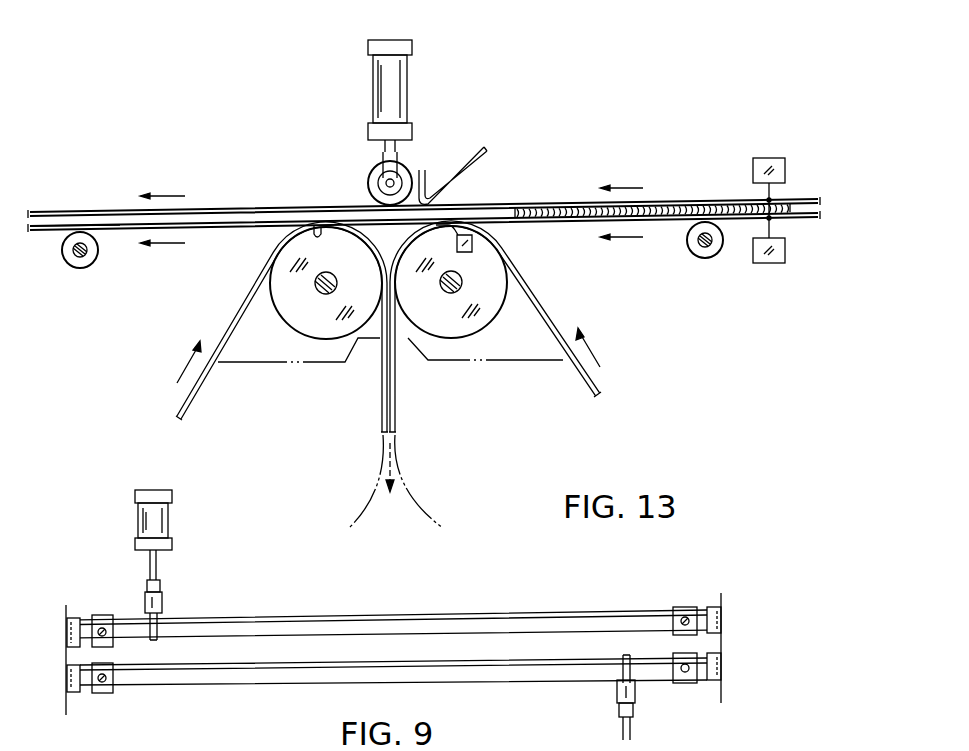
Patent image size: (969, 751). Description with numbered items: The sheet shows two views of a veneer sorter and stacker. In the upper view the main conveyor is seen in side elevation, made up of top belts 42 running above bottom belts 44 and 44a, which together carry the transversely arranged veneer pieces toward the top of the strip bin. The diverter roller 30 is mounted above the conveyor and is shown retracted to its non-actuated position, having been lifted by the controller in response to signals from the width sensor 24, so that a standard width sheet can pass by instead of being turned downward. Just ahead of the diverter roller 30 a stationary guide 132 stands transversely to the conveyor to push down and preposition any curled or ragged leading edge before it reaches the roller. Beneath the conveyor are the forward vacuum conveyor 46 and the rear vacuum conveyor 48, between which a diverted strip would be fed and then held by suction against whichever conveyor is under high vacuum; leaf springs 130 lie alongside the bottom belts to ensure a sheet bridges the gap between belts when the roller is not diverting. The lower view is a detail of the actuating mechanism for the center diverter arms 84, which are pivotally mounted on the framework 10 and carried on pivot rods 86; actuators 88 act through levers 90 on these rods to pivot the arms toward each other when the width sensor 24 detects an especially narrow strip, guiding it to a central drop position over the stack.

In FIG. 9, the framework 10 is at (723, 636).
In FIG. 13, the veneer width sensor 24 is at (758, 158).
In FIG. 13, the diverter roller 30 is at (368, 186).
In FIG. 13, the top belts 42 is at (83, 210).
In FIG. 13, the bottom belts 44 is at (571, 228).
In FIG. 13, the bottom belts 44a is at (48, 234).
In FIG. 13, the forward vacuum conveyor 46 is at (380, 410).
In FIG. 13, the rear vacuum conveyor 48 is at (397, 410).
In FIG. 9, the center diverter arms 84 is at (98, 615).
In FIG. 9, the pivot rods 86 is at (375, 625).
In FIG. 9, the actuators 88 is at (158, 574).
In FIG. 9, the levers 90 is at (164, 613).
In FIG. 13, the leaf springs 130 is at (322, 237).
In FIG. 13, the stationary guide 132 is at (486, 148).